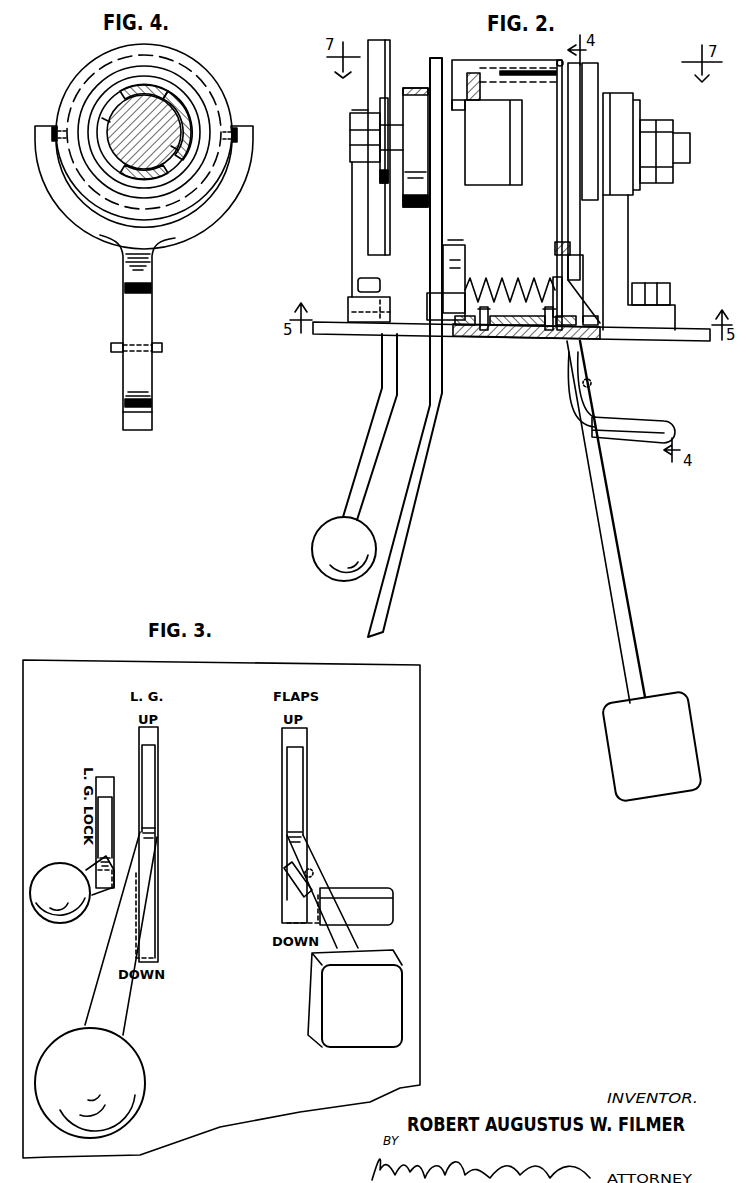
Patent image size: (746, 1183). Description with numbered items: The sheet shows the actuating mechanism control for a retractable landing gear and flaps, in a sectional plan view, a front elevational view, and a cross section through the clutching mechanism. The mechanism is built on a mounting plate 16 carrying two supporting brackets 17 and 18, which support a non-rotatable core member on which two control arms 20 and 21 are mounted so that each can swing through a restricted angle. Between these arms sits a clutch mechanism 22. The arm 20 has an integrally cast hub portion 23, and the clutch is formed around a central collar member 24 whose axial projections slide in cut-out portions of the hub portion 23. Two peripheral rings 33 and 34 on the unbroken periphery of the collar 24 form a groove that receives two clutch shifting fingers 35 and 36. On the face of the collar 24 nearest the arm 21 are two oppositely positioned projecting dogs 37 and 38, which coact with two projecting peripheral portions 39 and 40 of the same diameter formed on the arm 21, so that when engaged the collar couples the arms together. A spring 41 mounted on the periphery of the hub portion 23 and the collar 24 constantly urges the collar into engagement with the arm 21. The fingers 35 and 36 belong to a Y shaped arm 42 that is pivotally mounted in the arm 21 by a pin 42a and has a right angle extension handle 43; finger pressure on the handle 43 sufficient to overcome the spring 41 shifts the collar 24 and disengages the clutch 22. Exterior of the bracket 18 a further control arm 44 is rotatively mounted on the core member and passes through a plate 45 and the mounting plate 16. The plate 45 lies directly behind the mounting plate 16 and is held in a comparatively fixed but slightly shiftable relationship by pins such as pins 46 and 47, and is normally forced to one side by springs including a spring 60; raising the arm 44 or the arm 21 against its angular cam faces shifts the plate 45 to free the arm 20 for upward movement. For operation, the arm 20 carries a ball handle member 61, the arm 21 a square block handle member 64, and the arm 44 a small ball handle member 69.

In FIG. 2, the mounting plate 16 is at (362, 328).
In FIG. 3, the mounting plate 16 is at (68, 665).
In FIG. 2, the supporting bracket 17 is at (628, 245).
In FIG. 2, the supporting bracket 18 is at (405, 230).
In FIG. 2, the control arm 20 is at (415, 505).
In FIG. 3, the control arm 20 is at (135, 995).
In FIG. 2, the control arm 21 is at (602, 548).
In FIG. 3, the control arm 21 is at (308, 950).
In FIG. 2, the clutch mechanism 22 is at (468, 44).
In FIG. 2, the hub portion 23 is at (476, 72).
In FIG. 2, the central collar member 24 is at (520, 225).
In FIG. 2, the peripheral ring 33 is at (560, 62).
In FIG. 2, the peripheral ring 34 is at (588, 66).
In FIG. 4, the clutch shifting finger 35 is at (56, 126).
In FIG. 4, the clutch shifting finger 36 is at (236, 127).
In FIG. 4, the projecting dog 37 is at (146, 86).
In FIG. 4, the projecting dog 38 is at (138, 176).
In FIG. 4, the projecting peripheral portion 39 is at (185, 105).
In FIG. 4, the projecting peripheral portion 40 is at (112, 160).
In FIG. 2, the spring 41 is at (452, 56).
In FIG. 2, the Y shaped arm 42 is at (560, 276).
In FIG. 3, the Y shaped arm 42 is at (284, 885).
In FIG. 4, the pin 42a is at (156, 345).
In FIG. 2, the pin 42a is at (583, 372).
In FIG. 3, the pin 42a is at (312, 875).
In FIG. 2, the right angle extension handle 43 is at (645, 404).
In FIG. 3, the right angle extension handle 43 is at (388, 893).
In FIG. 2, the control arm 44 is at (378, 413).
In FIG. 3, the control arm 44 is at (96, 896).
In FIG. 2, the plate 45 is at (596, 350).
In FIG. 2, the pin 46 is at (482, 332).
In FIG. 2, the pin 47 is at (558, 333).
In FIG. 2, the spring 60 is at (512, 337).
In FIG. 3, the ball handle member 61 is at (148, 1090).
In FIG. 2, the square block handle member 64 is at (609, 756).
In FIG. 3, the square block handle member 64 is at (312, 1005).
In FIG. 2, the small ball handle member 69 is at (318, 538).
In FIG. 3, the small ball handle member 69 is at (62, 863).